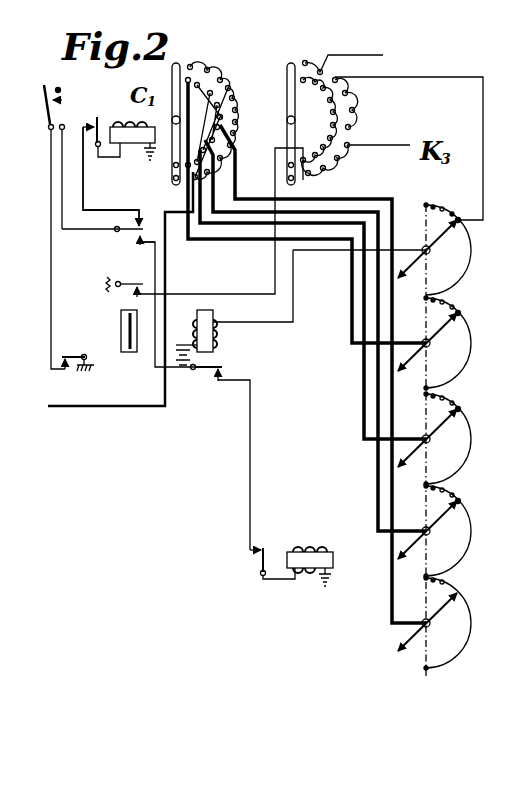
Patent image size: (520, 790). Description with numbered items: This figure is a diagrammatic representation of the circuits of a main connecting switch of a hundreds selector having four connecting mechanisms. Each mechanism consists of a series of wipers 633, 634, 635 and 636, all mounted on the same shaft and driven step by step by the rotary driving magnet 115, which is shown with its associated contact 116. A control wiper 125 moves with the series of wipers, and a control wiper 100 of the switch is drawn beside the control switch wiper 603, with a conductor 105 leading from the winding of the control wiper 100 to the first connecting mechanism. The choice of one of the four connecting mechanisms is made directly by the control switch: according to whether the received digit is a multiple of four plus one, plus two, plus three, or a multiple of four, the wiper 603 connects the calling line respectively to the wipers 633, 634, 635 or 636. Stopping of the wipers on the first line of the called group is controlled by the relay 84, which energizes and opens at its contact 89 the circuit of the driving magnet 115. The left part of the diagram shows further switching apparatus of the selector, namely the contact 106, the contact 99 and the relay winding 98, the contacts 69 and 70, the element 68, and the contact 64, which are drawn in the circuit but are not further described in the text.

The switch contact 106 is at (67, 106).
The relay contact 99 is at (104, 131).
The relay coil 98 is at (133, 132).
The wiper 603 is at (177, 150).
The control wiper 100 is at (287, 97).
The conductor 105 is at (409, 140).
The relay contact 69 is at (102, 220).
The relay contact 70 is at (136, 240).
The resistor 68 is at (118, 331).
The switch contact 64 is at (78, 357).
The relay 84 is at (219, 331).
The contact 89 is at (207, 377).
The control wiper 125 is at (382, 249).
The series of wipers 633 is at (434, 343).
The series of wipers 634 is at (434, 439).
The series of wipers 635 is at (434, 531).
The series of wipers 636 is at (434, 623).
The switch contact 116 is at (248, 562).
The driving magnet 115 is at (310, 559).